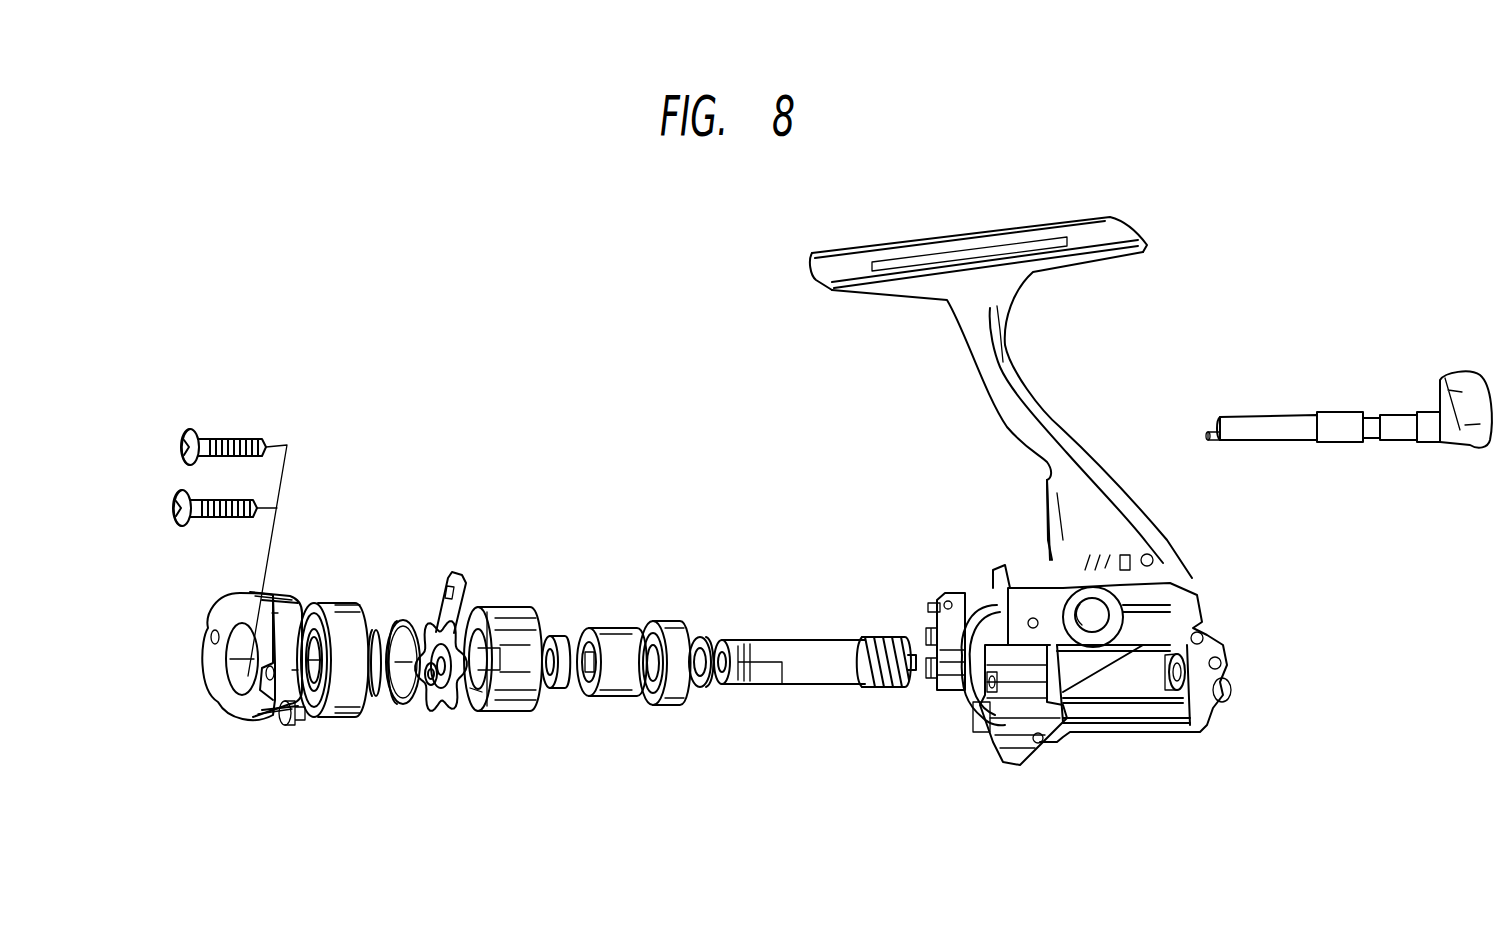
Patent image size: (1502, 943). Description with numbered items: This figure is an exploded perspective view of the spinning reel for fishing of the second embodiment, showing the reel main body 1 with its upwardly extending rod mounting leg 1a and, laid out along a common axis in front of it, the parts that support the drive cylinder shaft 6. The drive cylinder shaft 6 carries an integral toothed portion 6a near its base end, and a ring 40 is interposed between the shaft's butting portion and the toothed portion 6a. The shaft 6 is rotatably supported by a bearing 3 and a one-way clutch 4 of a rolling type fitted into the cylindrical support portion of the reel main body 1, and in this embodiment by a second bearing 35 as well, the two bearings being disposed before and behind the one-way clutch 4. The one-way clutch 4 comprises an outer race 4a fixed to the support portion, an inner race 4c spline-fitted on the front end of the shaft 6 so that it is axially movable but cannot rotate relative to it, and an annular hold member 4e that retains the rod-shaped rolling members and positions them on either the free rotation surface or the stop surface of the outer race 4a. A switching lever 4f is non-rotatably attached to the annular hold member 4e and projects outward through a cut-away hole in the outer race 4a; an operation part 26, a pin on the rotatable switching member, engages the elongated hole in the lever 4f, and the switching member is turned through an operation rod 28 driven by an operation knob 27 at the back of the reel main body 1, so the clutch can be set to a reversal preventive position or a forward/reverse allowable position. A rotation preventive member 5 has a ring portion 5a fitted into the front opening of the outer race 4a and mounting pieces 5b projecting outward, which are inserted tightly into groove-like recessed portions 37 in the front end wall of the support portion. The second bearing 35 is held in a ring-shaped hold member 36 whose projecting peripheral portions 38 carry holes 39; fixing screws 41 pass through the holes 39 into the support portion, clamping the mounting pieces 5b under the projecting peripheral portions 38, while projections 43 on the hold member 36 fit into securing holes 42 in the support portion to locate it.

The reel main body 1 is at (1205, 588).
The rod mounting leg 1a is at (1040, 365).
The bearing 3 is at (660, 700).
The one-way clutch 4 is at (505, 625).
The outer race 4a is at (530, 705).
The inner race 4c is at (610, 640).
The annular hold member 4e is at (465, 705).
The switching lever 4f is at (458, 580).
The rotation preventive member 5 is at (392, 696).
The ring portion 5a is at (405, 622).
The mounting pieces 5b is at (373, 634).
The drive cylinder shaft 6 is at (810, 645).
The toothed portion 6a is at (886, 690).
The operation part 26 is at (1215, 441).
The operation knob 27 is at (1470, 385).
The operation rod 28 is at (1255, 415).
The second bearing 35 is at (325, 612).
The hold member 36 is at (282, 605).
The recessed portions 37 is at (925, 650).
The projecting peripheral portions 38 is at (218, 615).
The holes 39 is at (208, 640).
The ring 40 is at (700, 640).
The fixing screws 41 is at (222, 437).
The securing holes 42 is at (940, 600).
The projections 43 is at (298, 728).